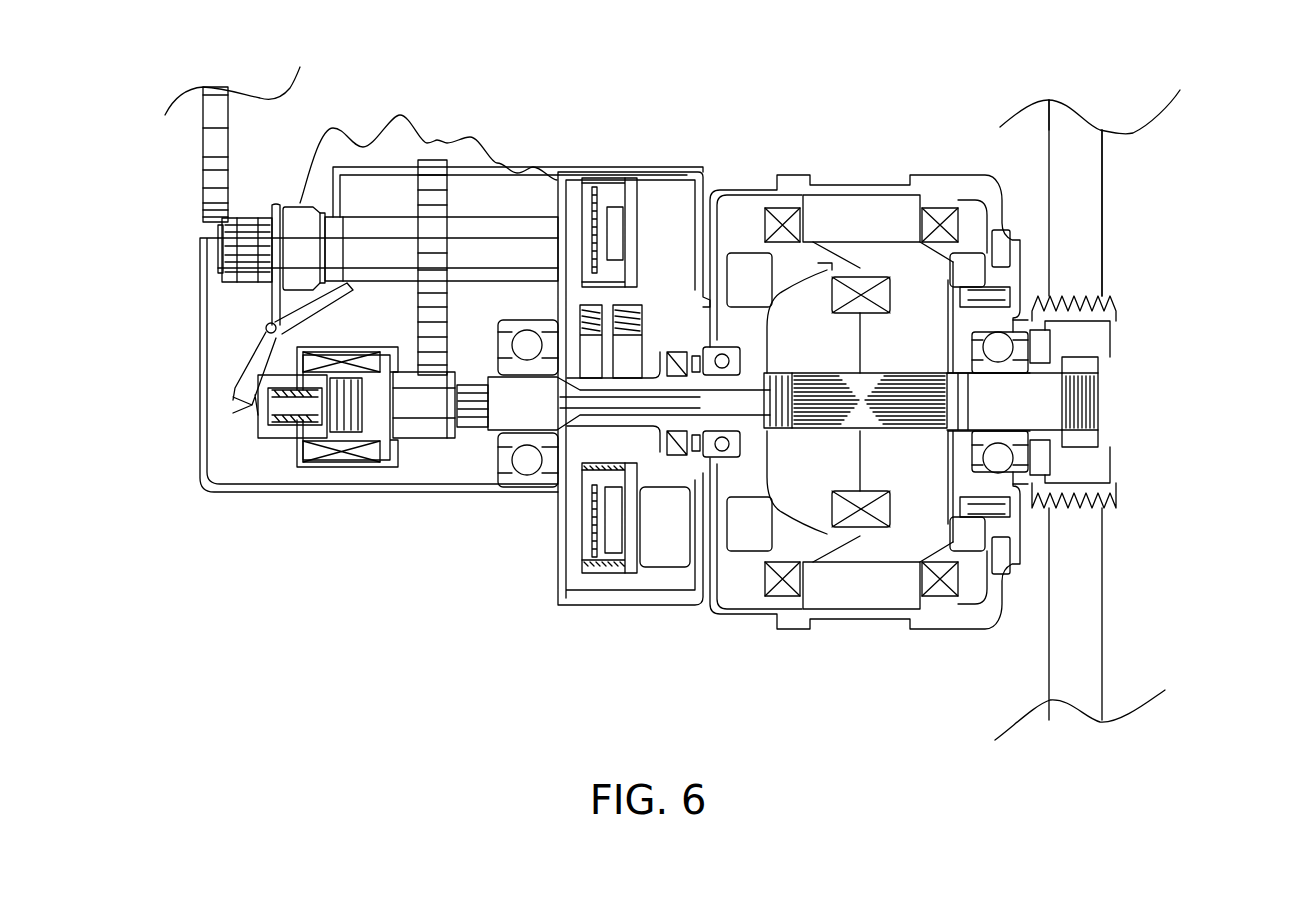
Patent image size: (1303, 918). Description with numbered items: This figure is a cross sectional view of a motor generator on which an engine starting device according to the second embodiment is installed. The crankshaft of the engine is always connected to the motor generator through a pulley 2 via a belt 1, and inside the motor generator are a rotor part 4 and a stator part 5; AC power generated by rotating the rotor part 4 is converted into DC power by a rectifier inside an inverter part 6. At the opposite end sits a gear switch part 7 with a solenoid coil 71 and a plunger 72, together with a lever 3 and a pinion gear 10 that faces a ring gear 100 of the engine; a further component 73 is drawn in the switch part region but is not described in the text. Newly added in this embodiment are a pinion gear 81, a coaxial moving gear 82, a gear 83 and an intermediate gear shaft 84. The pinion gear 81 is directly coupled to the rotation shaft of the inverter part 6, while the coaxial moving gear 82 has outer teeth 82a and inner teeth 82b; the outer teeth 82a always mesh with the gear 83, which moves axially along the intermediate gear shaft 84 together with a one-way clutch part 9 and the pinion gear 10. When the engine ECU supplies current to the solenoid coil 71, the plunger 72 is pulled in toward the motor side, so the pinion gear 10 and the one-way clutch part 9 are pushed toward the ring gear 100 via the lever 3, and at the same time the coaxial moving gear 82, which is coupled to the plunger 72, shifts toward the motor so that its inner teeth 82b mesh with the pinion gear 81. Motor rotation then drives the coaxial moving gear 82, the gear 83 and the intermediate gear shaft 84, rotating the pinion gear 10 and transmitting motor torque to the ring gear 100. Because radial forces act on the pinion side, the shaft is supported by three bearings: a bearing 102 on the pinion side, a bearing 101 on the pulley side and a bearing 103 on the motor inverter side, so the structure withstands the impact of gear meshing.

The belt 1 is at (1060, 248).
The pulley 2 is at (1060, 478).
The lever 3 is at (268, 331).
The rotor part 4 is at (870, 590).
The stator part 5 is at (838, 477).
The inverter part 6 is at (801, 475).
The gear switch part 7 is at (295, 344).
The one-way clutch part 9 is at (355, 405).
The pinion gear 10 is at (248, 237).
The solenoid coil 71 is at (373, 460).
The plunger 72 is at (290, 428).
The gear 73 is at (440, 227).
The pinion gear 81 is at (480, 478).
The coaxial moving gear 82 is at (458, 536).
The outer teeth 82a is at (405, 465).
The inner teeth 82b is at (473, 417).
The gear 83 is at (500, 257).
The intermediate gear shaft 84 is at (548, 327).
The ring gear 100 is at (209, 178).
The bearing 101 is at (1020, 472).
The bearing 102 is at (587, 165).
The bearing 103 is at (730, 352).